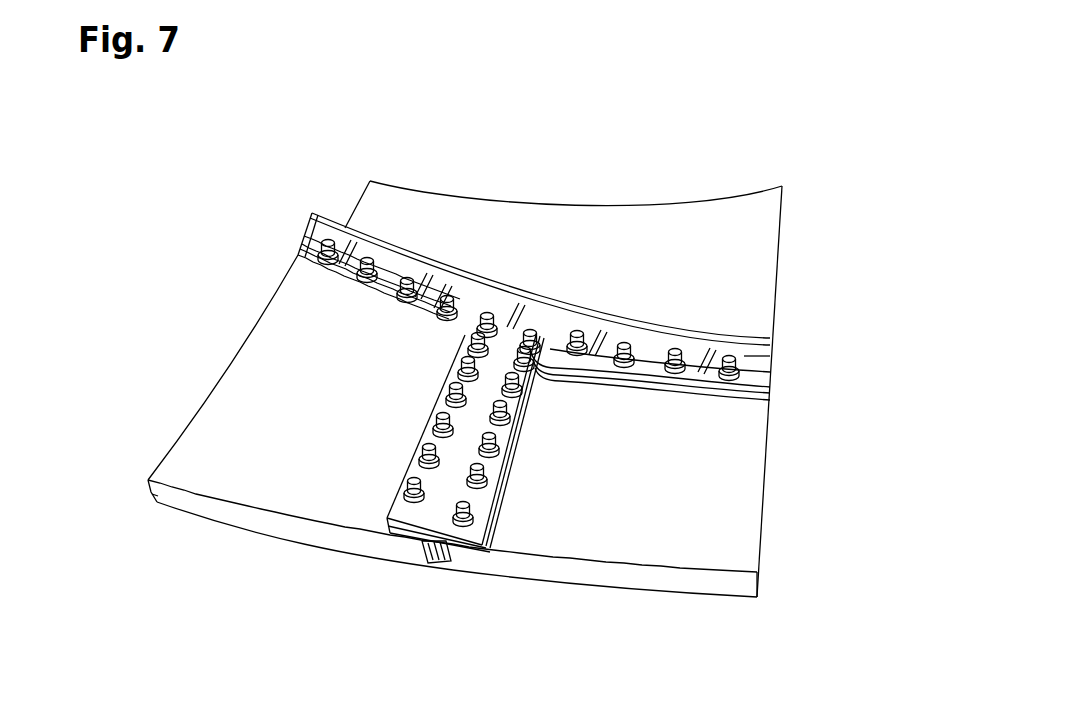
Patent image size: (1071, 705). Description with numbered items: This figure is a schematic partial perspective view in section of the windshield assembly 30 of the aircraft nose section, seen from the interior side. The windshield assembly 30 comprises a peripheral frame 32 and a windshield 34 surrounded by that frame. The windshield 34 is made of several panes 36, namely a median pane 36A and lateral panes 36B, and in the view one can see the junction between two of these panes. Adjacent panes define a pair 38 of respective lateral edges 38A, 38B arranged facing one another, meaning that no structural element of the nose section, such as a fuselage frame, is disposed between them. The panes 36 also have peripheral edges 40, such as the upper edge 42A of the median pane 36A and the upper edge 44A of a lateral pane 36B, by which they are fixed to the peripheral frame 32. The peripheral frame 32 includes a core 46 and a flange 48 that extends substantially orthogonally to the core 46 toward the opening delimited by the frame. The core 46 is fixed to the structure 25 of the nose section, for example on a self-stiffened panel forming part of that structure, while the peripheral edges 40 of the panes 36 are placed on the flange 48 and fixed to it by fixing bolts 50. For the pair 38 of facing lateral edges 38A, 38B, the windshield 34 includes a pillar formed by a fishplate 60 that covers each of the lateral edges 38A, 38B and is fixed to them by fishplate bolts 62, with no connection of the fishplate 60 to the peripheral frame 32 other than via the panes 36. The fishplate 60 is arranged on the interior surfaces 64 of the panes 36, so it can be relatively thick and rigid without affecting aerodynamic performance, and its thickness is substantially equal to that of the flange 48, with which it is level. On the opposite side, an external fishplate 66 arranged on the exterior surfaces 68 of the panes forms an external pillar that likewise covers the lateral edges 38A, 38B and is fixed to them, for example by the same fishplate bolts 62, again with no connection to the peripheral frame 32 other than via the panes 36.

The structure 25 is at (500, 210).
The windshield assembly 30 is at (195, 372).
The peripheral frame 32 is at (328, 200).
The windshield 34 is at (426, 470).
The panes 36 is at (427, 586).
The median pane 36A is at (245, 470).
The lateral pane 36B is at (642, 513).
The pair of lateral edges 38 is at (485, 650).
The lateral edge 38A is at (453, 546).
The lateral edge 38B is at (408, 551).
The peripheral edges 40 is at (787, 450).
The upper edge 42A is at (352, 338).
The upper edge 44A is at (580, 359).
The core 46 is at (391, 238).
The flange 48 is at (352, 312).
The fixing bolts 50 is at (735, 360).
The fishplate 60 is at (385, 497).
The fishplate bolts 62 is at (497, 476).
The interior surfaces 64 is at (194, 453).
The external fishplate 66 is at (396, 550).
The exterior surfaces 68 is at (175, 507).